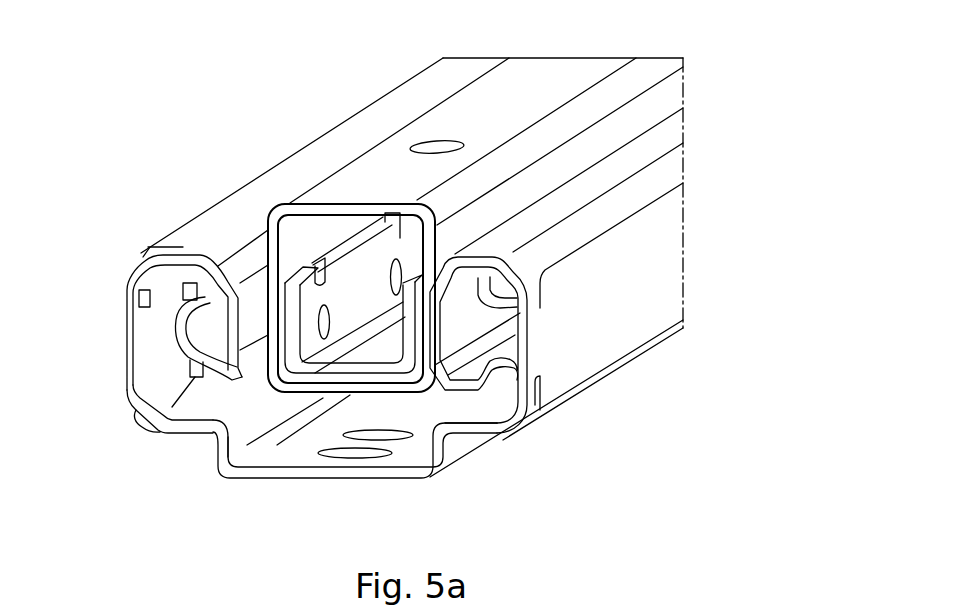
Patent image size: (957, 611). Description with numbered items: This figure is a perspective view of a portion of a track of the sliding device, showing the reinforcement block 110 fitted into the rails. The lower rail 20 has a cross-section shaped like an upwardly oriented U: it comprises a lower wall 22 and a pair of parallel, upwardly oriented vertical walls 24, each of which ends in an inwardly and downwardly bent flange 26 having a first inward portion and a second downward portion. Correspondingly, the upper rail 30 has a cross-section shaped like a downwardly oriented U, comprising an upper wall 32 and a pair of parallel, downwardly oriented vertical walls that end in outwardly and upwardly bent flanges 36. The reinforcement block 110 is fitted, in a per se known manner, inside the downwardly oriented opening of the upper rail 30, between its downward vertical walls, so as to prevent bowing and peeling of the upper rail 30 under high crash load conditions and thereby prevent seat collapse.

The lower rail 20 is at (440, 466).
The lower wall 22 is at (280, 478).
The upwardly oriented vertical wall 24 is at (148, 380).
The inwardly and downwardly bent flange 26 is at (226, 278).
The upper rail 30 is at (562, 78).
The upper wall 32 is at (360, 174).
The outwardly and upwardly bent flange 36 is at (178, 330).
The reinforcement block 110 is at (336, 395).